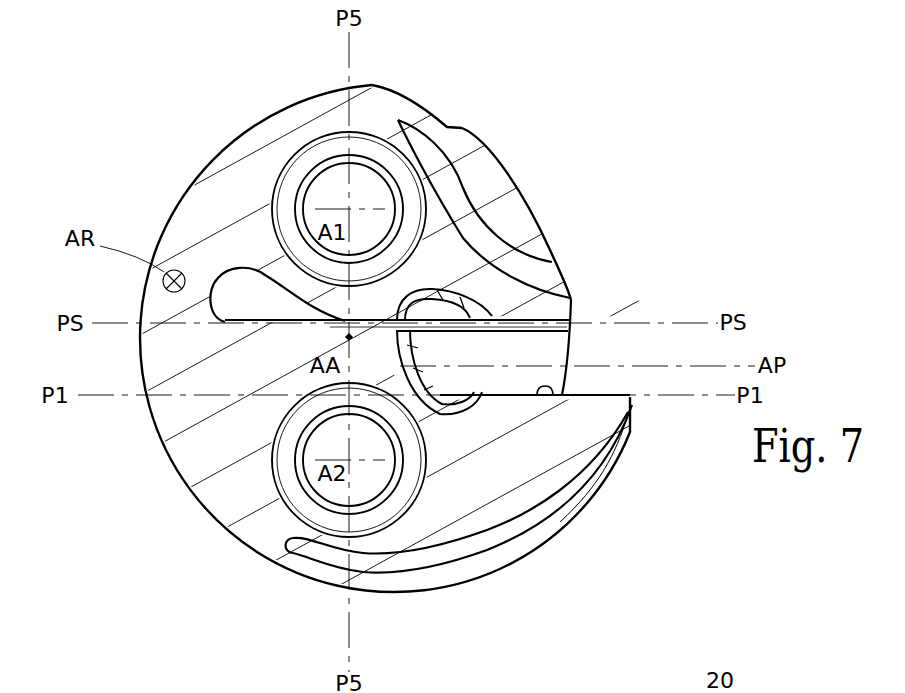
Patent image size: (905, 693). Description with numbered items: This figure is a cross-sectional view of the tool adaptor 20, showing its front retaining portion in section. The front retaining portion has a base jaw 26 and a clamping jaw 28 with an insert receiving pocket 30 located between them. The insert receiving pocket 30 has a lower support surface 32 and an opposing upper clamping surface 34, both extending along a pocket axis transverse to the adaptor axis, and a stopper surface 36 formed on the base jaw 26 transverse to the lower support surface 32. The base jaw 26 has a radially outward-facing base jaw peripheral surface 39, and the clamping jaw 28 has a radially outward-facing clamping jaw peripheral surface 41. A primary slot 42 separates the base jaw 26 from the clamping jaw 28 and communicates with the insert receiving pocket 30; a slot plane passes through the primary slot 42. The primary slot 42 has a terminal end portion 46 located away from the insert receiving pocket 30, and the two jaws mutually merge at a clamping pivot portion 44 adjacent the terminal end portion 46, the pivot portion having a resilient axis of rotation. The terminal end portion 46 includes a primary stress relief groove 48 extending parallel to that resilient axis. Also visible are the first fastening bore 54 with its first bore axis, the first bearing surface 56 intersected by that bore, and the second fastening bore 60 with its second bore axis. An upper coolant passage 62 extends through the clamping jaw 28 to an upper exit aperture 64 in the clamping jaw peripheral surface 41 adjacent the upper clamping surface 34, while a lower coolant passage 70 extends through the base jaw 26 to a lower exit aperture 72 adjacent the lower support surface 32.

The tool adaptor 20 is at (586, 115).
The base jaw 26 is at (214, 457).
The clamping jaw 28 is at (223, 195).
The insert receiving pocket 30 is at (424, 350).
The lower support surface 32 is at (610, 394).
The upper clamping surface 34 is at (542, 320).
The stopper surface 36 is at (572, 345).
The base jaw peripheral surface 39 is at (509, 572).
The clamping jaw peripheral surface 41 is at (403, 86).
The primary slot 42 is at (298, 326).
The clamping pivot portion 44 is at (161, 297).
The terminal end portion 46 is at (236, 308).
The primary stress relief groove 48 is at (238, 284).
The first fastening bore 54 is at (341, 198).
The first bearing surface 56 is at (298, 170).
The second fastening bore 60 is at (328, 442).
The upper coolant passage 62 is at (428, 148).
The upper exit aperture 64 is at (549, 270).
The lower coolant passage 70 is at (430, 560).
The lower exit aperture 72 is at (634, 412).